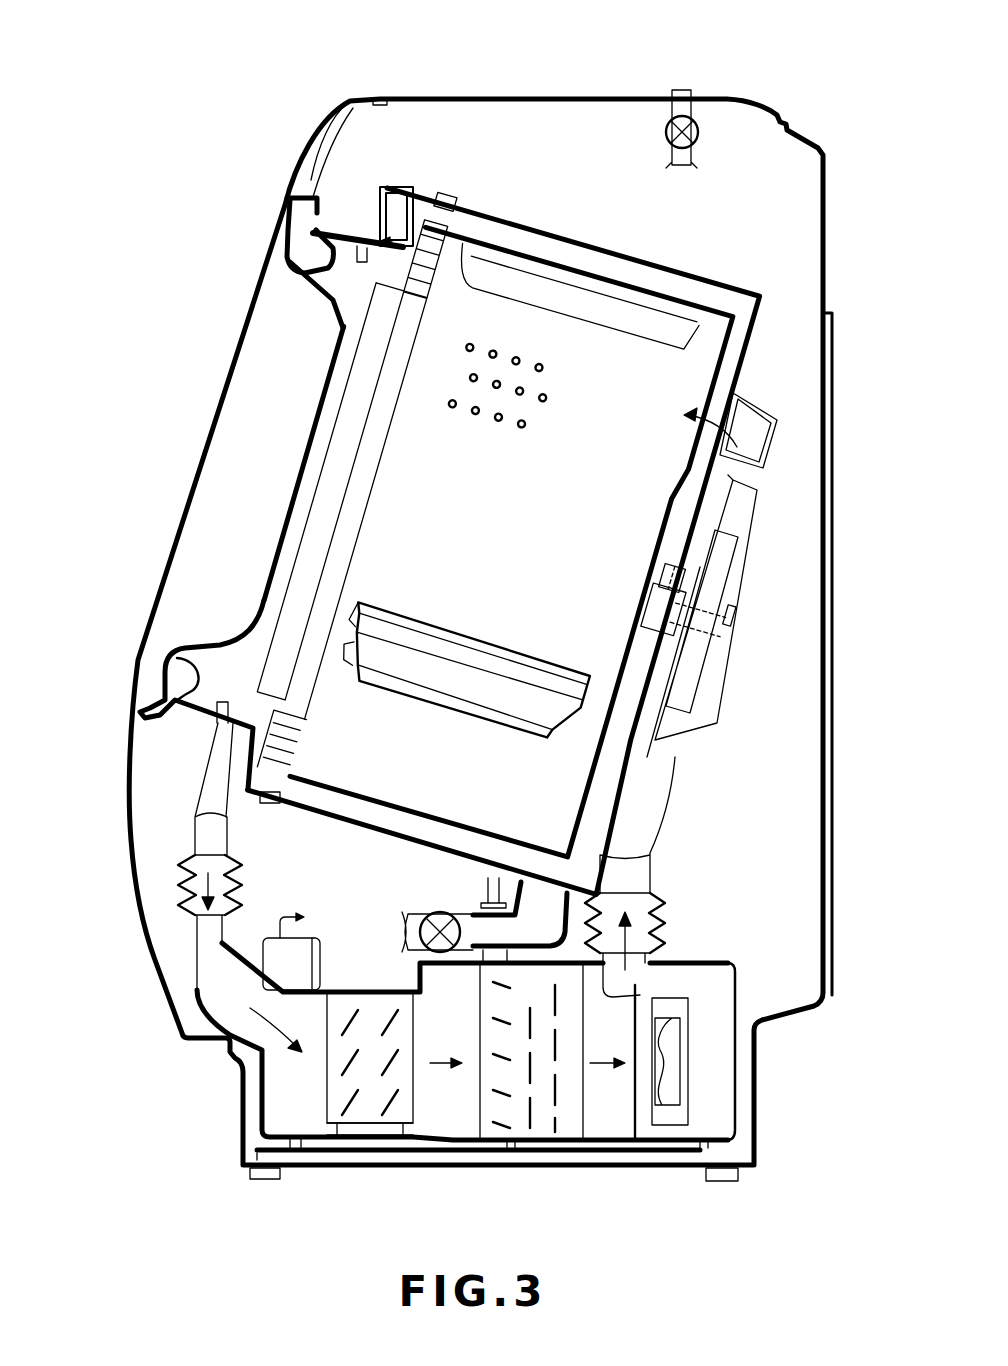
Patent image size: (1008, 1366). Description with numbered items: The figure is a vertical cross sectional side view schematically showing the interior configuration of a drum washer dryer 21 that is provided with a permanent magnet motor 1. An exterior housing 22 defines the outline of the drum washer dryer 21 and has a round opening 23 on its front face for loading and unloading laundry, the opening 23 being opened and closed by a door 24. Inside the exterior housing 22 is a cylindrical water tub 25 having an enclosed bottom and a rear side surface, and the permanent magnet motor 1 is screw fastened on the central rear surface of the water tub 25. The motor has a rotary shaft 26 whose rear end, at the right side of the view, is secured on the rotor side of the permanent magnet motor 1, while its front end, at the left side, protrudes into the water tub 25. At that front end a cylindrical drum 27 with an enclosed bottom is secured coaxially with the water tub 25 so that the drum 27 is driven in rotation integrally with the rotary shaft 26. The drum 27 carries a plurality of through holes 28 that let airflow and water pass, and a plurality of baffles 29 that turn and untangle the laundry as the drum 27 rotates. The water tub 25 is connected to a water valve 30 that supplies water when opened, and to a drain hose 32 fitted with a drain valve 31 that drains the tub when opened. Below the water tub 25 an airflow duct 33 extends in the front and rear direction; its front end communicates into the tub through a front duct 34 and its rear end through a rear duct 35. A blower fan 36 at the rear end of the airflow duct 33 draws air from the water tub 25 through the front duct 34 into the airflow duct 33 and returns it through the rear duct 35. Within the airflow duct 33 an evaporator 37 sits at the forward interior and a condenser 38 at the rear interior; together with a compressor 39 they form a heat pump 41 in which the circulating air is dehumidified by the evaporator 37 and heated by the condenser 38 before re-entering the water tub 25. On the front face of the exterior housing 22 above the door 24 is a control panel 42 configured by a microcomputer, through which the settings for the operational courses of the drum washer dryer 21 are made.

The permanent magnet motor 1 is at (762, 522).
The drum washer dryer 21 is at (505, 66).
The exterior housing 22 is at (130, 786).
The opening 23 is at (292, 247).
The door 24 is at (222, 388).
The water tub 25 is at (707, 278).
The rotary shaft 26 is at (668, 560).
The drum 27 is at (603, 282).
The through holes 28 is at (499, 423).
The baffles 29 is at (471, 720).
The water valve 30 is at (700, 132).
The drain valve 31 is at (438, 912).
The drain hose 32 is at (418, 918).
The airflow duct 33 is at (438, 1137).
The front duct 34 is at (200, 777).
The rear duct 35 is at (665, 800).
The blower fan 36 is at (735, 1080).
The evaporator 37 is at (368, 1115).
The condenser 38 is at (548, 1125).
The compressor 39 is at (322, 952).
The heat pump 41 is at (292, 896).
The control panel 42 is at (313, 143).